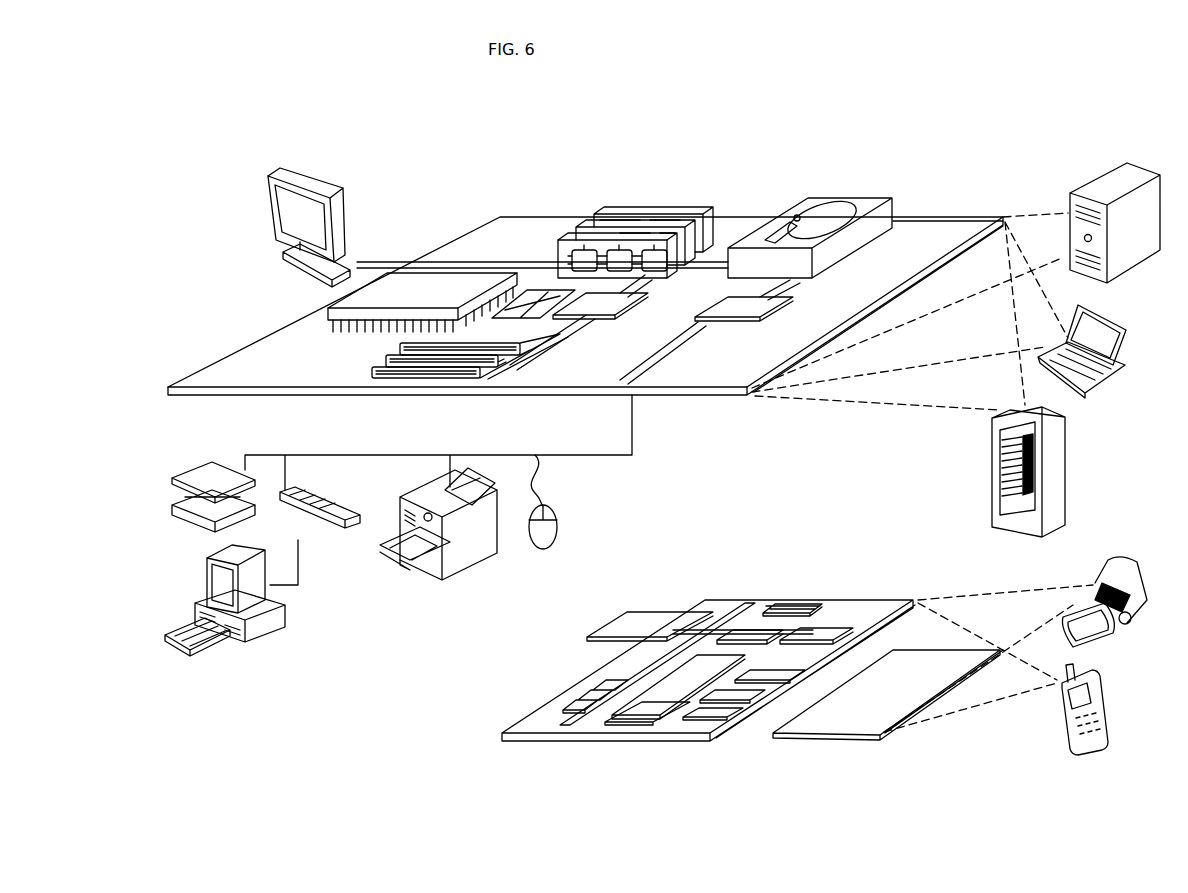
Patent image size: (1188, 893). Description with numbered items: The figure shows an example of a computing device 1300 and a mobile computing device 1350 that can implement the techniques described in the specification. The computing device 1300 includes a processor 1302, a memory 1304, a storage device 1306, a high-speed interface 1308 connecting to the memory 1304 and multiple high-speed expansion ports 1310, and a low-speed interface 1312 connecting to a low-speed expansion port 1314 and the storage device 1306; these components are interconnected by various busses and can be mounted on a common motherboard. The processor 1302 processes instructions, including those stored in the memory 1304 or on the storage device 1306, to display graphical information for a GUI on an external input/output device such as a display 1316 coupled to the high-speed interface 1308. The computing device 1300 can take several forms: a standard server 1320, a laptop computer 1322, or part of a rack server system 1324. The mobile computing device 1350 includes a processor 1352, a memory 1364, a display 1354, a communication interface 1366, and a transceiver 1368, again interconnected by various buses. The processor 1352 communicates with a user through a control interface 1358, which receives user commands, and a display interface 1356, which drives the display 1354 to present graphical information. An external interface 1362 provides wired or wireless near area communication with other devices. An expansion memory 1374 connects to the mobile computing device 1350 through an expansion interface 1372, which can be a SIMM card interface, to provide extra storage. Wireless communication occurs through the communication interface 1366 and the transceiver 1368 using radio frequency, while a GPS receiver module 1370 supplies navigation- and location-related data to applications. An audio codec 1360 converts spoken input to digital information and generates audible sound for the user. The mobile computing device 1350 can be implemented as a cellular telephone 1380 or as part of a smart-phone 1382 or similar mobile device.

The computing device 1300 is at (434, 190).
The processor 1302 is at (326, 312).
The memory 1304 is at (600, 212).
The storage device 1306 is at (813, 205).
The high-speed interface 1308 is at (527, 270).
The high-speed expansion ports 1310 is at (372, 372).
The low-speed interface 1312 is at (720, 298).
The low-speed expansion port 1314 is at (640, 395).
The display 1316 is at (266, 174).
The standard server 1320 is at (1070, 205).
The laptop computer 1322 is at (1125, 328).
The rack server system 1324 is at (996, 490).
The mobile computing device 1350 is at (486, 748).
The processor 1352 is at (650, 716).
The display 1354 is at (868, 722).
The display interface 1356 is at (717, 735).
The control interface 1358 is at (745, 720).
The audio codec 1360 is at (763, 700).
The external interface 1362 is at (618, 728).
The memory 1364 is at (572, 696).
The communication interface 1366 is at (752, 628).
The transceiver 1368 is at (818, 626).
The GPS receiver module 1370 is at (790, 603).
The expansion interface 1372 is at (675, 608).
The expansion memory 1374 is at (622, 615).
The cellular telephone 1380 is at (1100, 540).
The smart-phone 1382 is at (1062, 712).